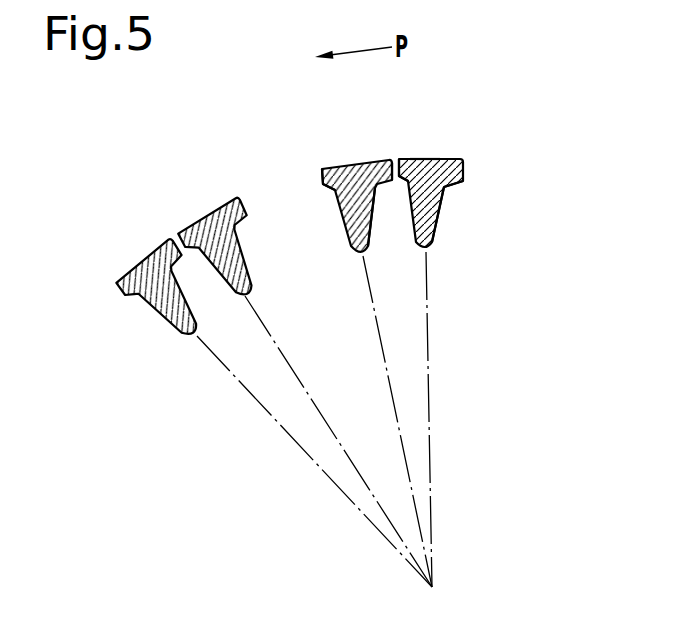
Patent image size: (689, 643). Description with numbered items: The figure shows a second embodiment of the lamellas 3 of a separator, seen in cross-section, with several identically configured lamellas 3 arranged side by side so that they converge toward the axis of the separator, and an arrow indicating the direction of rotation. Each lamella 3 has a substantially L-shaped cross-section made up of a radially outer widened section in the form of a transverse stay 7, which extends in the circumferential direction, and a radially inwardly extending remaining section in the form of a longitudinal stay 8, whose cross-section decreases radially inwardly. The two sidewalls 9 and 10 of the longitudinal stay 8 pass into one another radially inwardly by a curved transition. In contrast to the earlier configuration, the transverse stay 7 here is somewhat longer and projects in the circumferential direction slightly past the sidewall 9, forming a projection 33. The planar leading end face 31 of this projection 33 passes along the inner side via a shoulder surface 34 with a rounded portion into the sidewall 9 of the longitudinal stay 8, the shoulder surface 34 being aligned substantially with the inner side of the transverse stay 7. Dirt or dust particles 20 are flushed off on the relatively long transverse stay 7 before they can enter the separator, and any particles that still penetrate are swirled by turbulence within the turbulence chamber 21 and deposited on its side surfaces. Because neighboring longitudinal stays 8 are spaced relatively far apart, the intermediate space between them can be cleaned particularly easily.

The lamellas 3 is at (188, 208).
The transverse stay 7 is at (446, 163).
The longitudinal stay 8 is at (434, 222).
The sidewall 9 is at (419, 160).
The sidewall 10 is at (366, 212).
The dirt/dust particles 20 is at (391, 157).
The turbulence chamber 21 is at (445, 186).
The end face 31 is at (377, 161).
The projection 33 is at (405, 175).
The shoulder surface 34 is at (332, 189).